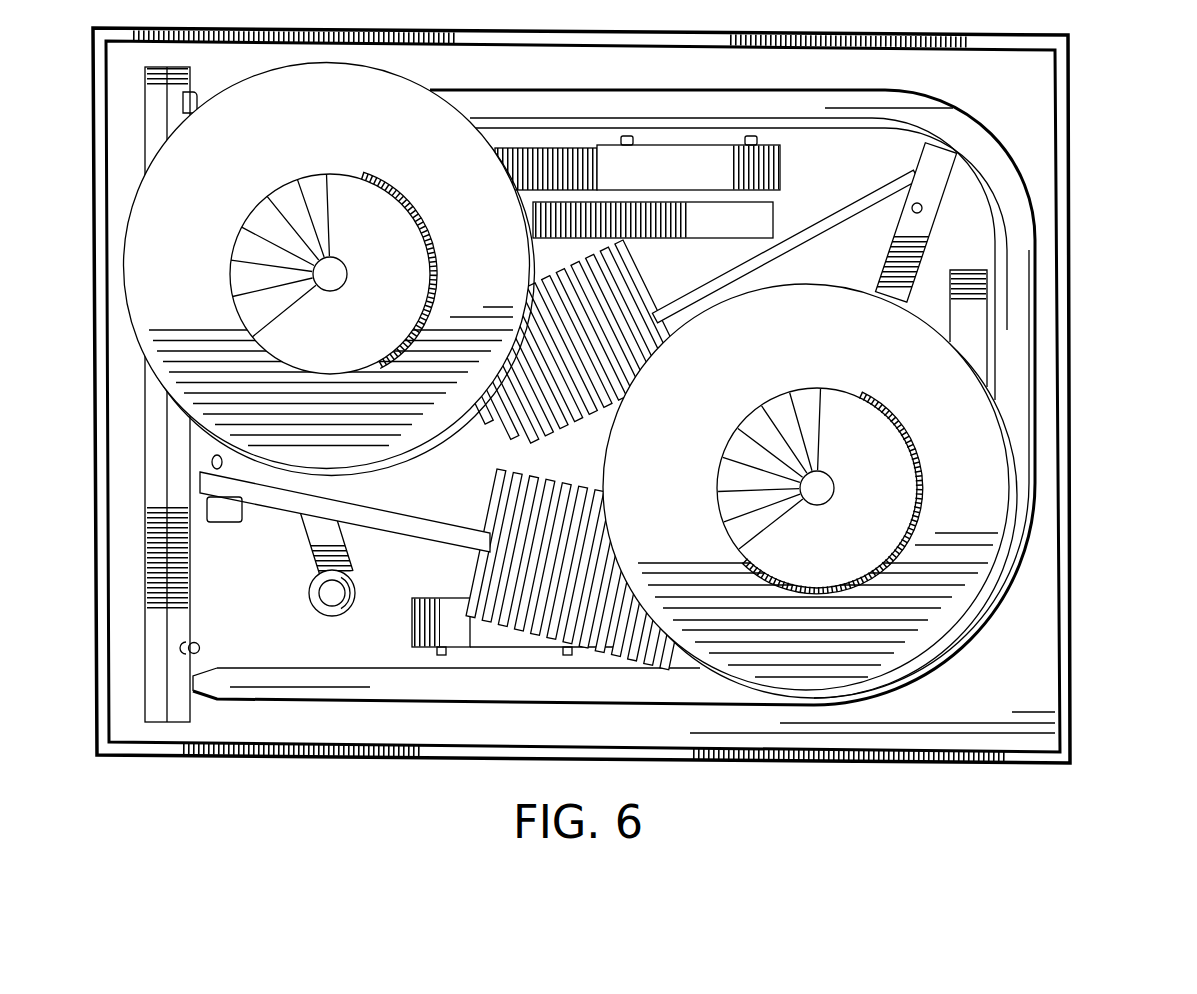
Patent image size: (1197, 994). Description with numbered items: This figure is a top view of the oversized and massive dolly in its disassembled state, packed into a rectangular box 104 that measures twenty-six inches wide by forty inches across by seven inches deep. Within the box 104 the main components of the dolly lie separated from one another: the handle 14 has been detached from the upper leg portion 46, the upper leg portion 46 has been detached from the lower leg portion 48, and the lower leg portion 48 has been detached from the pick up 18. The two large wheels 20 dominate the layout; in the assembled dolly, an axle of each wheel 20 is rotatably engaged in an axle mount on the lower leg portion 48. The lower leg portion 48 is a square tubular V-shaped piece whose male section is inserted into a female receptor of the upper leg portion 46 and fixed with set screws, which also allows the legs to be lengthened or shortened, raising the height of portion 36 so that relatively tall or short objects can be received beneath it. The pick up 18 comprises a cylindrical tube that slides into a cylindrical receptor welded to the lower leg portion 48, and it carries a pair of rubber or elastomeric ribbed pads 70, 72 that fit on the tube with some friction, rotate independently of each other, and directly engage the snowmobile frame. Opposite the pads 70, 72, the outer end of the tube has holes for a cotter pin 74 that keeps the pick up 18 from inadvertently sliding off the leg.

The handle 14 is at (1003, 143).
The pick up 18 is at (851, 203).
The wheel 20 is at (385, 139).
The portion 36 is at (197, 610).
The upper leg portion 46 is at (551, 148).
The lower leg portion 48 is at (947, 307).
The ribbed pad 70 is at (519, 634).
The ribbed pad 72 is at (620, 650).
The cotter pin 74 is at (917, 213).
The rectangular box 104 is at (1073, 642).